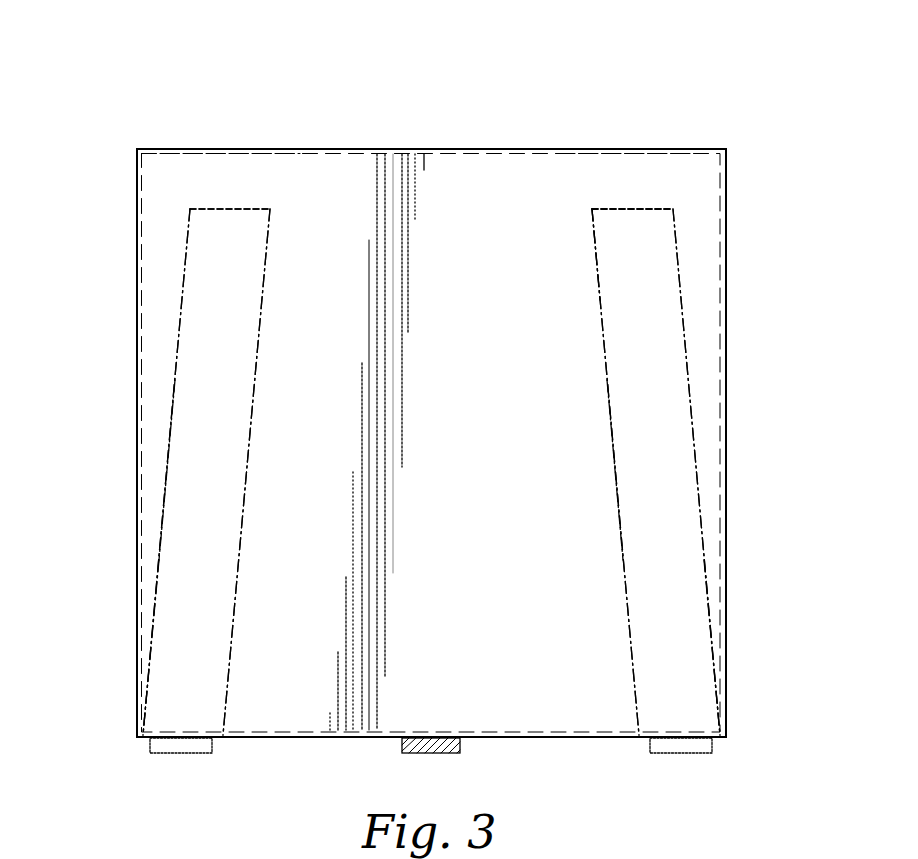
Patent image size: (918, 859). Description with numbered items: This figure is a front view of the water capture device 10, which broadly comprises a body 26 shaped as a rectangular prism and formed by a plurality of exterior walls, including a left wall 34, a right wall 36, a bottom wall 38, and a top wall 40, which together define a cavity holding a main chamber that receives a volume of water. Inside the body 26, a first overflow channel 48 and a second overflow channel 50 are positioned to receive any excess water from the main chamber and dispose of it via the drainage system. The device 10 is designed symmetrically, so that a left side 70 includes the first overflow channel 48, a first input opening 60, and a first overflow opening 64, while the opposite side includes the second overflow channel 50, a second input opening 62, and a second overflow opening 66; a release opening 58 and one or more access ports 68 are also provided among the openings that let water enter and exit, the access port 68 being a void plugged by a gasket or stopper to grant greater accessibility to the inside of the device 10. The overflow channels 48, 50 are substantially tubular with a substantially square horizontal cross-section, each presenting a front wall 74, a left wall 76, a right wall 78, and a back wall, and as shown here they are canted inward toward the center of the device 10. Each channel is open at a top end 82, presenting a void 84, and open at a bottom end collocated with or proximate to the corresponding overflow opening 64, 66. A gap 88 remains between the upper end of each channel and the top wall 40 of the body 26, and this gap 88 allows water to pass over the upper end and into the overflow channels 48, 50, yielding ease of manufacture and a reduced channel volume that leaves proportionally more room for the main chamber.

The water capture device 10 is at (176, 110).
The body 26 is at (327, 148).
The left wall 34 is at (137, 535).
The right wall 36 is at (727, 490).
The bottom wall 38 is at (576, 740).
The top wall 40 is at (530, 148).
The first overflow channel 48 is at (180, 663).
The second overflow channel 50 is at (678, 665).
The release opening 58 is at (428, 762).
The first input opening 60 is at (168, 146).
The second input opening 62 is at (682, 147).
The first overflow opening 64 is at (172, 763).
The second overflow opening 66 is at (681, 763).
The access port 68 is at (460, 748).
The left side 70 is at (78, 376).
The front wall 74 is at (192, 424).
The left wall 76 is at (182, 318).
The right wall 78 is at (263, 314).
The top end 82 is at (643, 251).
The void 84 is at (210, 264).
The gap 88 is at (208, 183).